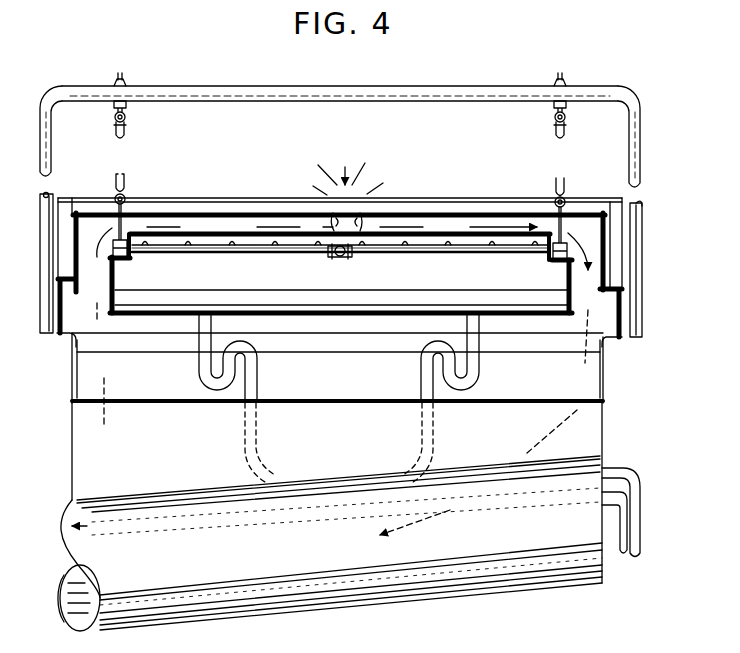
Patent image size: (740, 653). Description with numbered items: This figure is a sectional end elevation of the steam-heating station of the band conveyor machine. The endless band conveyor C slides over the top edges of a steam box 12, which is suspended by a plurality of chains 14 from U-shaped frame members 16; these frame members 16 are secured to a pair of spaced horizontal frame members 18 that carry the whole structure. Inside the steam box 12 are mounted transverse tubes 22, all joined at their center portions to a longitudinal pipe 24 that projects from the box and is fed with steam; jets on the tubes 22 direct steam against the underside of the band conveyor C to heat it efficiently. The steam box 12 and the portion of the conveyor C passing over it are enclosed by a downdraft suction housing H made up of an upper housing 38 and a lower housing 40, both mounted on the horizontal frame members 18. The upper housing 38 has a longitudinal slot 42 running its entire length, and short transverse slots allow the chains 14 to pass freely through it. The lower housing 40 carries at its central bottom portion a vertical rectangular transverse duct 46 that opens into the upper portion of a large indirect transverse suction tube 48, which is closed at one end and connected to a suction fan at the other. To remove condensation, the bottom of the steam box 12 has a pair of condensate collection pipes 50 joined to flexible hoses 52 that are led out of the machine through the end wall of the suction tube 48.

The U-shaped frame member 16 is at (457, 93).
The chain 14 is at (126, 130).
The upper housing 38 is at (198, 213).
The horizontal frame member 18 is at (58, 305).
The steam box 12 is at (110, 277).
The band conveyor C is at (460, 235).
The transverse tube 22 is at (252, 250).
The longitudinal pipe 24 is at (324, 255).
The longitudinal slot 42 is at (363, 193).
The condensate collection pipe 50 is at (200, 372).
The lower housing 40 is at (150, 403).
The vertical rectangular transverse duct 46 is at (592, 432).
The indirect transverse suction tube 48 is at (483, 583).
The flexible hose 52 is at (627, 475).
The downdraft suction housing H is at (45, 360).